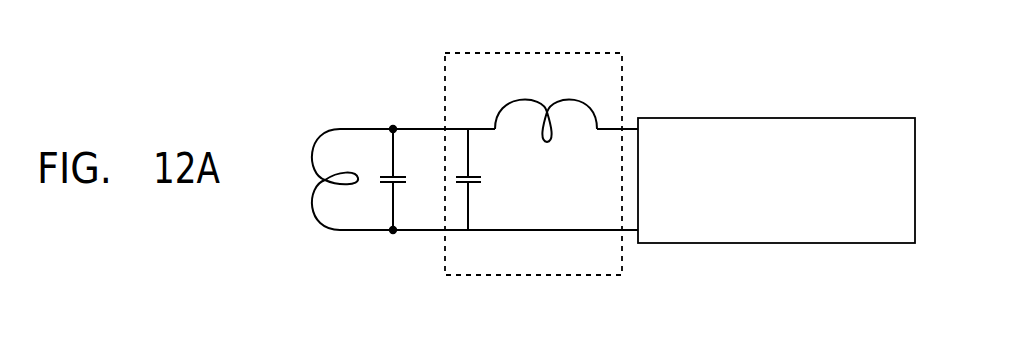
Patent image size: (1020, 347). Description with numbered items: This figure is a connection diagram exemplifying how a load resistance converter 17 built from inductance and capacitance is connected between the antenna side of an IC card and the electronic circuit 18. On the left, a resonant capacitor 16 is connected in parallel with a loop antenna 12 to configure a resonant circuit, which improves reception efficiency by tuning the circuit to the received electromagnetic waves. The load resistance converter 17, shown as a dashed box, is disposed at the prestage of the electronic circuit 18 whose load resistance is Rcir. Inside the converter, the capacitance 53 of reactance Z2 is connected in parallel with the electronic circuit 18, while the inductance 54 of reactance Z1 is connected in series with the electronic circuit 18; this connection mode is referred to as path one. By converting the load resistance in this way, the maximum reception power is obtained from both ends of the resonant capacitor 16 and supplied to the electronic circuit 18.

The loop antenna 12 is at (318, 150).
The resonant capacitor 16 is at (397, 174).
The load resistance converter 17 is at (557, 53).
The capacitance 53 is at (475, 172).
The inductance 54 is at (573, 95).
The electronic circuit 18 is at (750, 118).